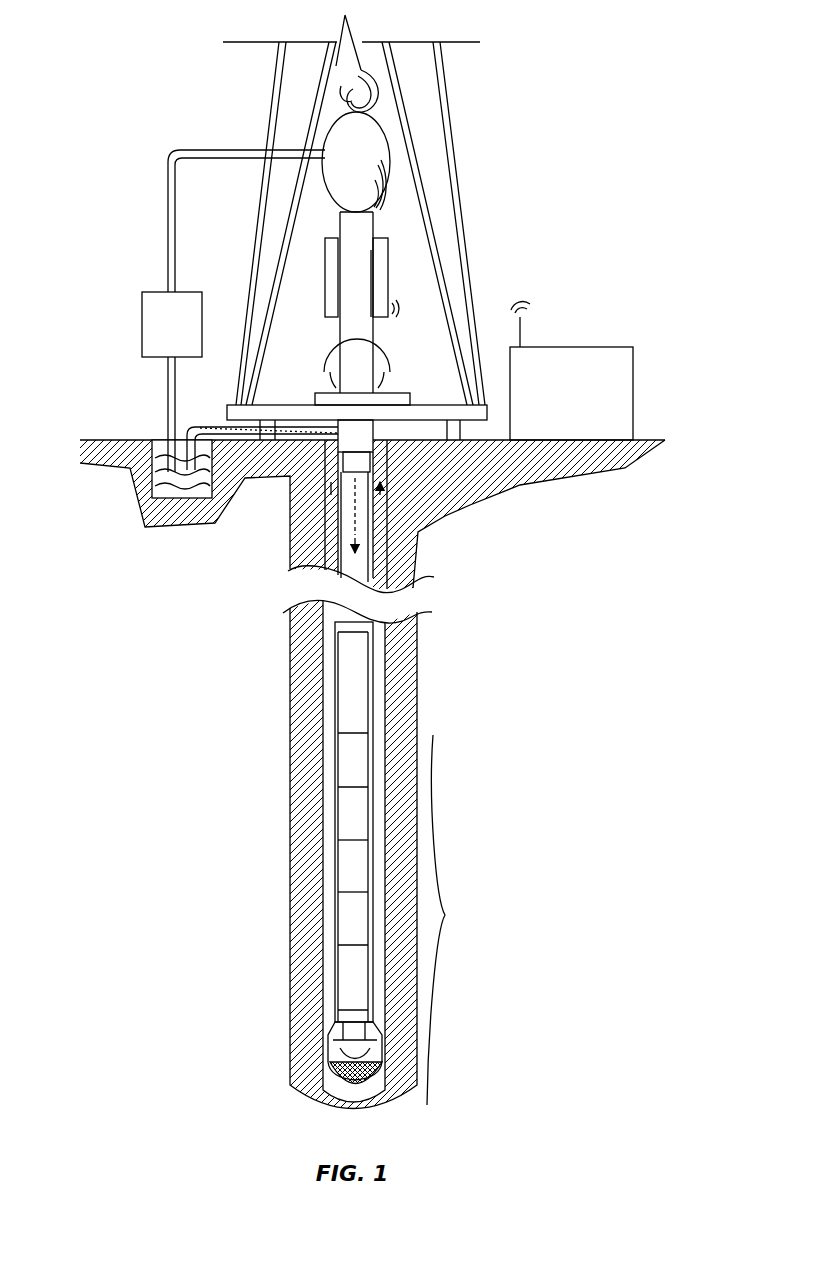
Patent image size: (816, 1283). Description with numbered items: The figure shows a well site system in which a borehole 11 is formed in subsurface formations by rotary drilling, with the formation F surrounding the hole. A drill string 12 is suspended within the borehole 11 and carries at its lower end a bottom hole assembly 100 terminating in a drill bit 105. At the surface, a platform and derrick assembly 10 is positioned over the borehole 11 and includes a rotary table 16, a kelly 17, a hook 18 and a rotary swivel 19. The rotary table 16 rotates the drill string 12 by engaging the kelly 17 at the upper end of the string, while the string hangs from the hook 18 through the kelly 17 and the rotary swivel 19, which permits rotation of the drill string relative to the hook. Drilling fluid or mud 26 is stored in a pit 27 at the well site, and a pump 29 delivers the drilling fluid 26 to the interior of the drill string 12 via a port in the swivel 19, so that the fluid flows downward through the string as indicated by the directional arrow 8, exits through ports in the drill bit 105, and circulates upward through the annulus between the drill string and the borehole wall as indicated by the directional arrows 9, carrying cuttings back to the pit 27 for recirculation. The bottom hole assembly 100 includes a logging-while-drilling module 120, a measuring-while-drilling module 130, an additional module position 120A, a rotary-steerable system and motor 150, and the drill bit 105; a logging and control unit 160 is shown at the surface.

The platform and derrick assembly 10 is at (468, 124).
The hook 18 is at (345, 62).
The rotary swivel 19 is at (332, 193).
The kelly 17 is at (338, 383).
The rotary table 16 is at (396, 393).
The drill string 12 is at (357, 445).
The borehole 11 is at (385, 440).
The directional arrow 8 is at (352, 522).
The directional arrows 9 is at (328, 505).
The pump 29 is at (156, 358).
The pit 27 is at (160, 444).
The drilling fluid 26 is at (170, 515).
The formation F is at (562, 477).
The logging and control unit 160 is at (573, 347).
The bottom hole assembly 100 is at (409, 863).
The logging-while-drilling module 120 is at (343, 812).
The measuring-while-drilling module 130 is at (343, 867).
The LWD module 120A is at (343, 920).
The rotary-steerable system and motor 150 is at (343, 973).
The drill bit 105 is at (330, 1055).